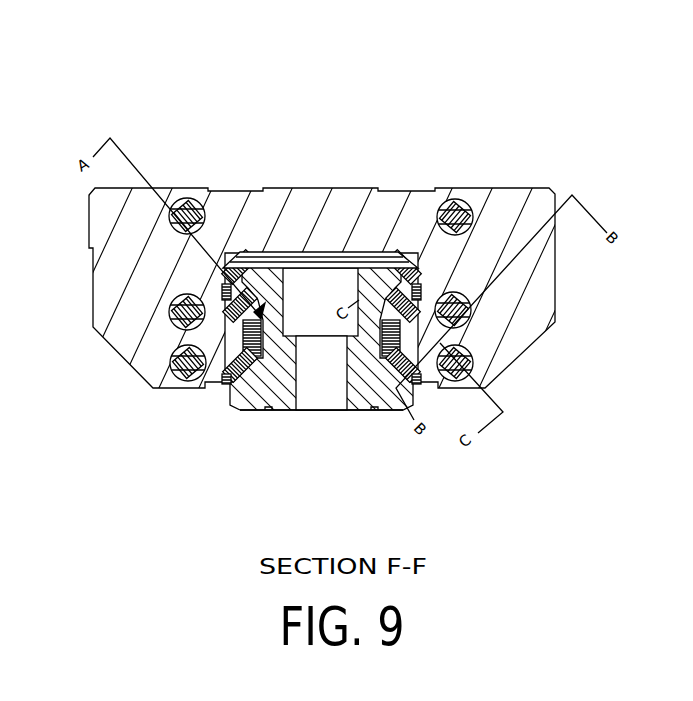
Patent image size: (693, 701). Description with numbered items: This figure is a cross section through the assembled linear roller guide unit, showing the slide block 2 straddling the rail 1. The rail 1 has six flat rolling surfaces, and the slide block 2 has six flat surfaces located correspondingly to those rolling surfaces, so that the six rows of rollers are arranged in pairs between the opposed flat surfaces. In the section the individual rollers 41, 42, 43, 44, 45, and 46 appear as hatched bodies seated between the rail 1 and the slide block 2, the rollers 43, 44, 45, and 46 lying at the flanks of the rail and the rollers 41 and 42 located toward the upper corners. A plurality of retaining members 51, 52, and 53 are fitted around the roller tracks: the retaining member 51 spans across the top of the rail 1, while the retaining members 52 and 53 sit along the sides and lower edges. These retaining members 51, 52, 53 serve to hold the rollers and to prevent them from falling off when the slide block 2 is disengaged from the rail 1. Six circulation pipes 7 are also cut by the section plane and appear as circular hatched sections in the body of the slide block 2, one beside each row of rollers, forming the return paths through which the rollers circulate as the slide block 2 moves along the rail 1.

The rail 1 is at (260, 397).
The slide block 2 is at (347, 200).
The circulation pipe 7 is at (200, 195).
The roller 41 is at (472, 221).
The roller 42 is at (474, 367).
The roller 43 is at (170, 221).
The roller 44 is at (170, 372).
The roller 45 is at (470, 323).
The roller 46 is at (234, 312).
The retaining member 51 is at (298, 251).
The retaining member 52 is at (236, 333).
The retaining member 53 is at (228, 385).